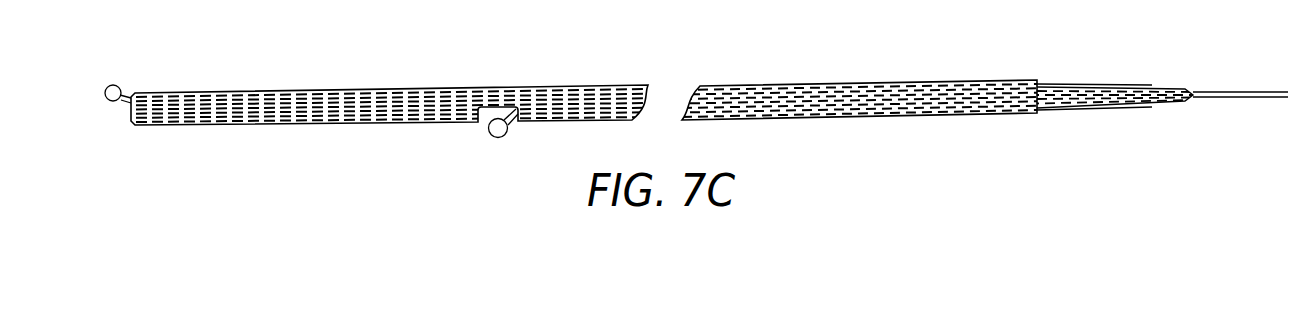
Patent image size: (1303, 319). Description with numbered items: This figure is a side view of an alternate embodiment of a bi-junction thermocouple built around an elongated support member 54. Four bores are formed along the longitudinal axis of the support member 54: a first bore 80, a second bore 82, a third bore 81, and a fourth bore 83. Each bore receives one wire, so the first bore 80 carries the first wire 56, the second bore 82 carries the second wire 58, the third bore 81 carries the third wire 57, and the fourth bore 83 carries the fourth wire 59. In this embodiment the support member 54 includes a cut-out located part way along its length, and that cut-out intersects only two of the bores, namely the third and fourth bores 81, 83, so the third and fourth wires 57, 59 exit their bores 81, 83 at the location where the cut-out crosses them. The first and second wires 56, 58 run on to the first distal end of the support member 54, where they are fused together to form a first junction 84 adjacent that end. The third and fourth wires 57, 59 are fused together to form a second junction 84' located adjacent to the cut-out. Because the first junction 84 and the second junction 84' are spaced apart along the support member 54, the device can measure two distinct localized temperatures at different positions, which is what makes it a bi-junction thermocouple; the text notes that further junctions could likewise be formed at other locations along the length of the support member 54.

The support member 54 is at (252, 90).
The first wire 56 is at (1105, 83).
The third wire 57 is at (1241, 98).
The second wire 58 is at (1242, 91).
The fourth wire 59 is at (1115, 108).
The first bore 80 is at (305, 95).
The third bore 81 is at (280, 112).
The second bore 82 is at (341, 98).
The fourth bore 83 is at (317, 115).
The first junction 84 is at (107, 118).
The second junction 84' is at (491, 145).